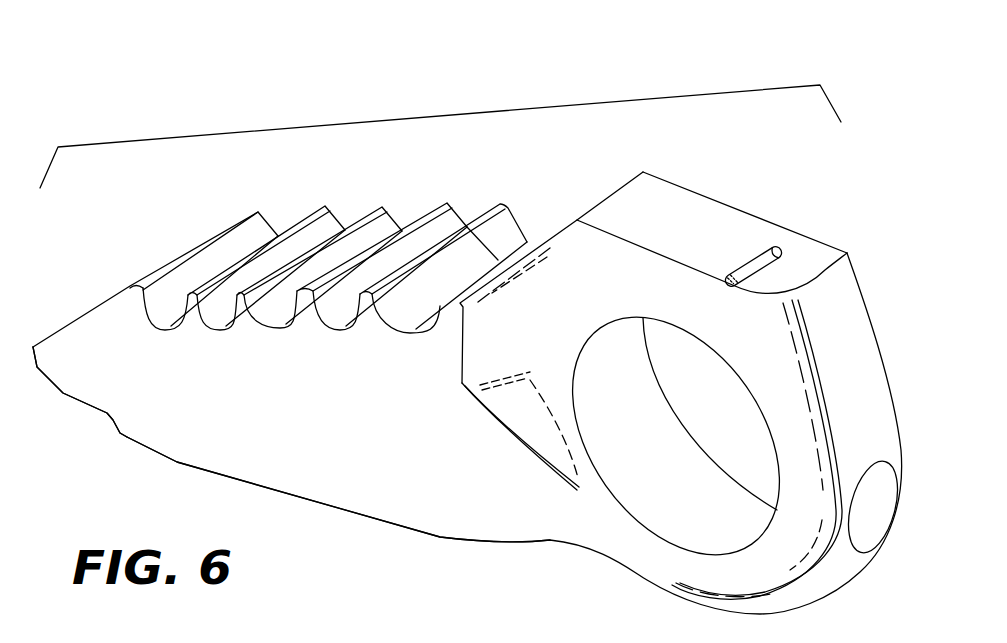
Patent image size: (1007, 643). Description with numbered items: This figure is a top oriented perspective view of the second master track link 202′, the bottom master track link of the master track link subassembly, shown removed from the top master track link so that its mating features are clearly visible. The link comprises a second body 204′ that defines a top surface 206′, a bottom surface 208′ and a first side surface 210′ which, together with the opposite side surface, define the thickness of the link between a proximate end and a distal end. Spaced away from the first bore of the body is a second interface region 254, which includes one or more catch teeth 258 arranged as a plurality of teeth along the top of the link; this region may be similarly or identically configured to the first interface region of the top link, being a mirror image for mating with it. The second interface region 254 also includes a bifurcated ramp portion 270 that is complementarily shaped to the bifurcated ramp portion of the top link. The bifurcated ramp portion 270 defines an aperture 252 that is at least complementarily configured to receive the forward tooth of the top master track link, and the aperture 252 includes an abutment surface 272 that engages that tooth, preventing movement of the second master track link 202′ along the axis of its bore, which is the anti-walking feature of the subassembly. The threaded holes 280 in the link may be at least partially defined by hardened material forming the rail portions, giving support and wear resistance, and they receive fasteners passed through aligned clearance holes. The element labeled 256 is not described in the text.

The second master track link 202′ is at (185, 107).
The second interface region 254 is at (437, 116).
The grooves 256 is at (400, 206).
The catch teeth 258 is at (365, 220).
The threaded holes 280 is at (207, 260).
The bifurcated ramp portion 270 is at (578, 220).
The abutment surface 272 is at (773, 250).
The aperture 252 is at (743, 267).
The top surface 206′ is at (820, 260).
The first side surface 210′ is at (350, 428).
The second body 204′ is at (192, 433).
The bottom surface 208′ is at (378, 523).